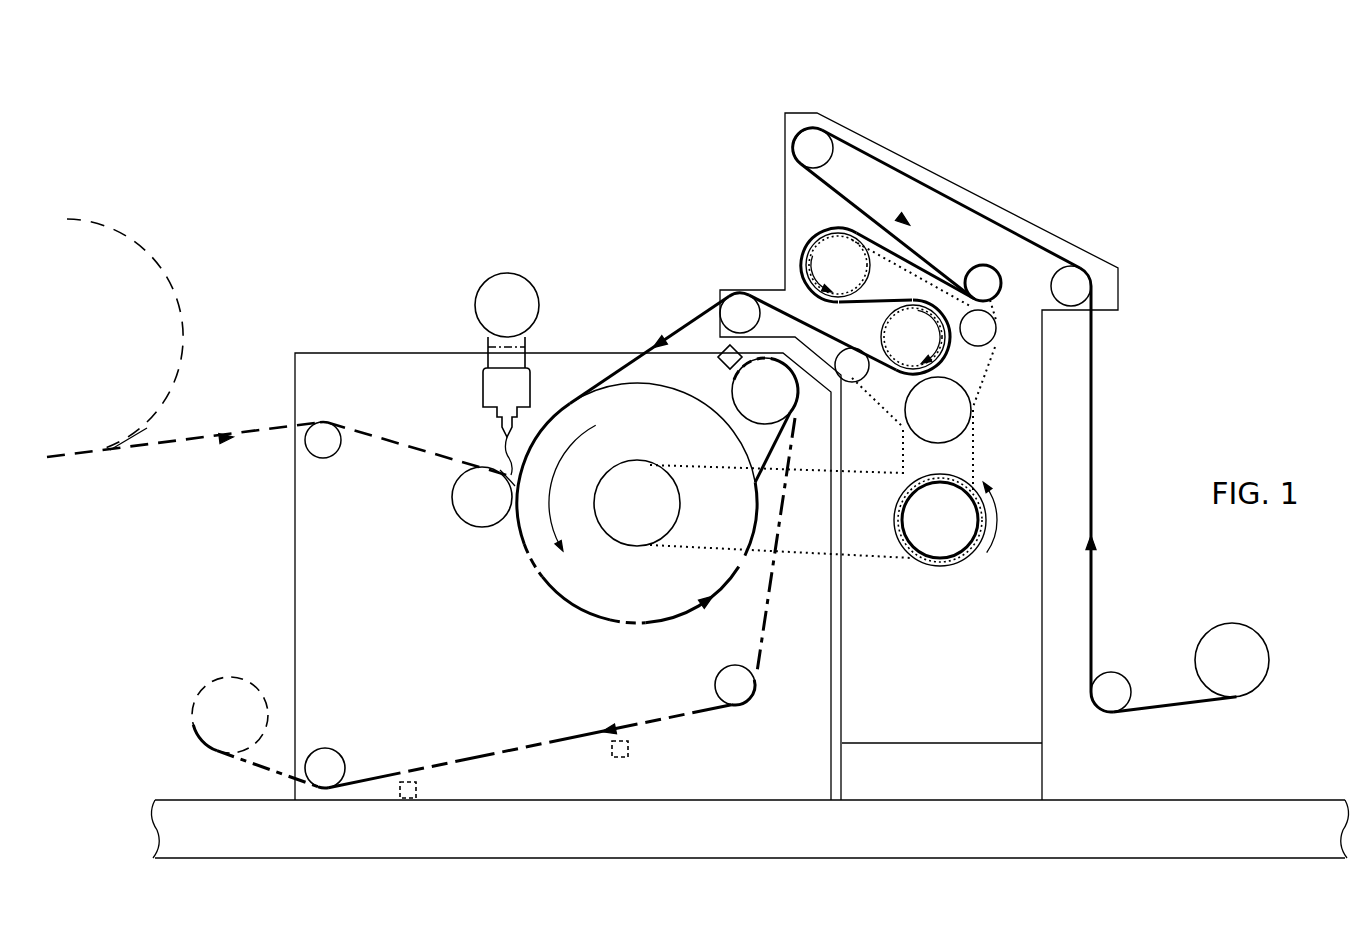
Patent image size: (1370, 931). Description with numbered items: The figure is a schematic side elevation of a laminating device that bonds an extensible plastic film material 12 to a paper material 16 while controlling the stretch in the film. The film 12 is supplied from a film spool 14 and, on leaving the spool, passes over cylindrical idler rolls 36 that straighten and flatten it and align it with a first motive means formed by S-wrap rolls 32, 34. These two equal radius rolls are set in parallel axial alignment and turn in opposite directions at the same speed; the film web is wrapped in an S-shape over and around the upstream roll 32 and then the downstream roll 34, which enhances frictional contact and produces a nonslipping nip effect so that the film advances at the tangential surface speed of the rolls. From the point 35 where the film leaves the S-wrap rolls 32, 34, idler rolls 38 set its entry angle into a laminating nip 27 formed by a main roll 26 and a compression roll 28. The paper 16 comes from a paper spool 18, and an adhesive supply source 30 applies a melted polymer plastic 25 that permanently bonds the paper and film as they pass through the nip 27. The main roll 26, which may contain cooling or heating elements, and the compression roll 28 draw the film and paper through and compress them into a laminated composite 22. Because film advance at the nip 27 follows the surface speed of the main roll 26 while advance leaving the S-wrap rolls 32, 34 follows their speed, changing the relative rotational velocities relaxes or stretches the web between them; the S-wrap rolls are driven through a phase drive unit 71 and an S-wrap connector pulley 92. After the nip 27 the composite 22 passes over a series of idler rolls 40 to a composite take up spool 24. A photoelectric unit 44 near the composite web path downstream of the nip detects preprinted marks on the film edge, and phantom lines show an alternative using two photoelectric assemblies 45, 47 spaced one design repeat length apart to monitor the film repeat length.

The extensible plastic film material 12 is at (1093, 398).
The film spool 14 is at (1232, 640).
The paper material 16 is at (365, 432).
The paper spool 18 is at (150, 262).
The laminated composite 22 is at (512, 553).
The composite take up spool 24 is at (210, 695).
The melted polymer plastic 25 is at (507, 468).
The main roll 26 is at (560, 585).
The laminating nip 27 is at (507, 478).
The compression roll 28 is at (472, 508).
The adhesive supply source 30 is at (513, 352).
The upstream S-wrap roll 32 is at (823, 250).
The downstream S-wrap roll 34 is at (912, 333).
The point where the film leaves the S-wrap rolls 35 is at (873, 355).
The cylindrical idler rolls 36 is at (1080, 290).
The idler rolls 38 is at (735, 302).
The idler rolls 40 is at (335, 760).
The photoelectric unit 44 is at (722, 363).
The photoelectric assembly 45 is at (612, 752).
The photoelectric assembly 47 is at (418, 790).
The phase drive unit 71 is at (935, 540).
The S-wrap connector pulley 92 is at (975, 418).